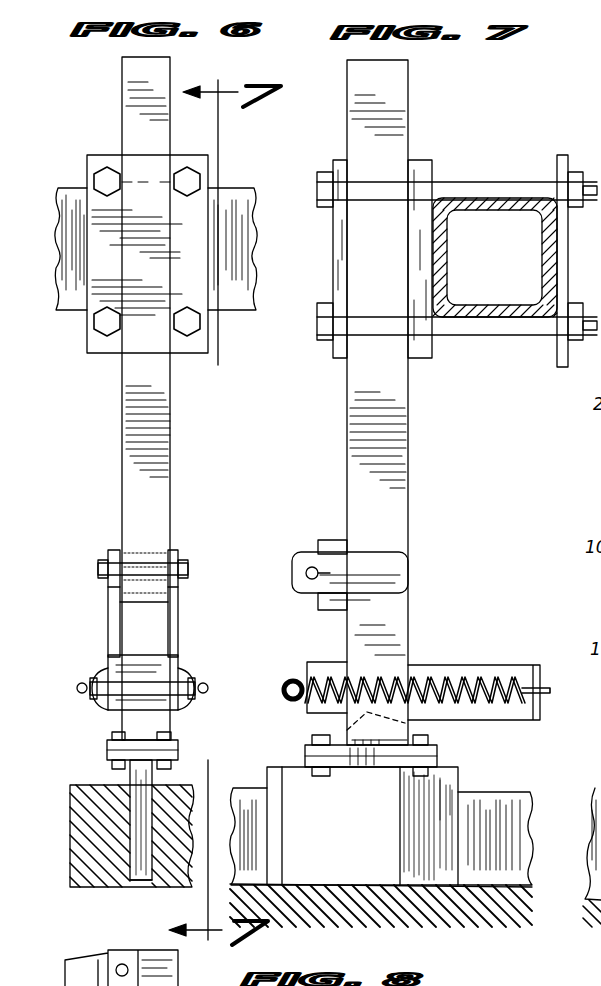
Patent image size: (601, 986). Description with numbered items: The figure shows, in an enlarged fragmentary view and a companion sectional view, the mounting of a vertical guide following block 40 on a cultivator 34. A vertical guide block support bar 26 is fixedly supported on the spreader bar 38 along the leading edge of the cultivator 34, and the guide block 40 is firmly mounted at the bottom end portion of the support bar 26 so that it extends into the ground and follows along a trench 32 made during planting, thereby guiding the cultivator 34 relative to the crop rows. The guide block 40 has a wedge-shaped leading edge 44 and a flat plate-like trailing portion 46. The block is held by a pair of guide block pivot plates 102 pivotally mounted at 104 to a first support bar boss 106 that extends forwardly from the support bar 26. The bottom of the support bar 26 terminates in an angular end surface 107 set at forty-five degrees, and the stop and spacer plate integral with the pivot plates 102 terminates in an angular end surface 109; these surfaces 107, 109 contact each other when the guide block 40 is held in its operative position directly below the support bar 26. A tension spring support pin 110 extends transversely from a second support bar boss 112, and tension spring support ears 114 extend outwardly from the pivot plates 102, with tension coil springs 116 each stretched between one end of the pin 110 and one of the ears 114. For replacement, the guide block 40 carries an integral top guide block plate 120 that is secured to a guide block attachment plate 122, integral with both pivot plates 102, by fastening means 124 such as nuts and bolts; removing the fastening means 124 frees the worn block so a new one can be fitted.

In FIG. 6, the vertical guide block support bar 26 is at (157, 373).
In FIG. 7, the vertical guide block support bar 26 is at (402, 107).
In FIG. 7, the trench 32 is at (253, 808).
In FIG. 6, the cultivator 34 is at (237, 335).
In FIG. 7, the cultivator 34 is at (412, 380).
In FIG. 6, the spreader bar 38 is at (237, 190).
In FIG. 7, the spreader bar 38 is at (447, 200).
In FIG. 6, the vertical guide following block 40 is at (137, 810).
In FIG. 7, the vertical guide following block 40 is at (442, 790).
In FIG. 6, the wedge-shaped leading edge 44 is at (157, 900).
In FIG. 7, the wedge-shaped leading edge 44 is at (270, 870).
In FIG. 6, the flat plate-like trailing portion 46 is at (137, 868).
In FIG. 7, the flat plate-like trailing portion 46 is at (377, 839).
In FIG. 6, the guide block pivot plate 102 is at (115, 618).
In FIG. 7, the guide block pivot plate 102 is at (403, 587).
In FIG. 6, the pivotal mounting 104 is at (98, 563).
In FIG. 7, the pivotal mounting 104 is at (306, 571).
In FIG. 6, the first support bar boss 106 is at (157, 550).
In FIG. 7, the first support bar boss 106 is at (337, 542).
In FIG. 7, the angular end surface 107 is at (342, 727).
In FIG. 7, the angular end surface 109 is at (408, 722).
In FIG. 6, the tension spring support pin 110 is at (203, 697).
In FIG. 6, the second support bar boss 112 is at (153, 668).
In FIG. 6, the tension spring support ear 114 is at (103, 678).
In FIG. 7, the tension spring support ear 114 is at (552, 650).
In FIG. 7, the tension coil spring 116 is at (430, 675).
In FIG. 6, the top guide block plate 120 is at (107, 755).
In FIG. 7, the top guide block plate 120 is at (437, 760).
In FIG. 6, the guide block attachment plate 122 is at (112, 737).
In FIG. 6, the fastening means 124 is at (172, 737).